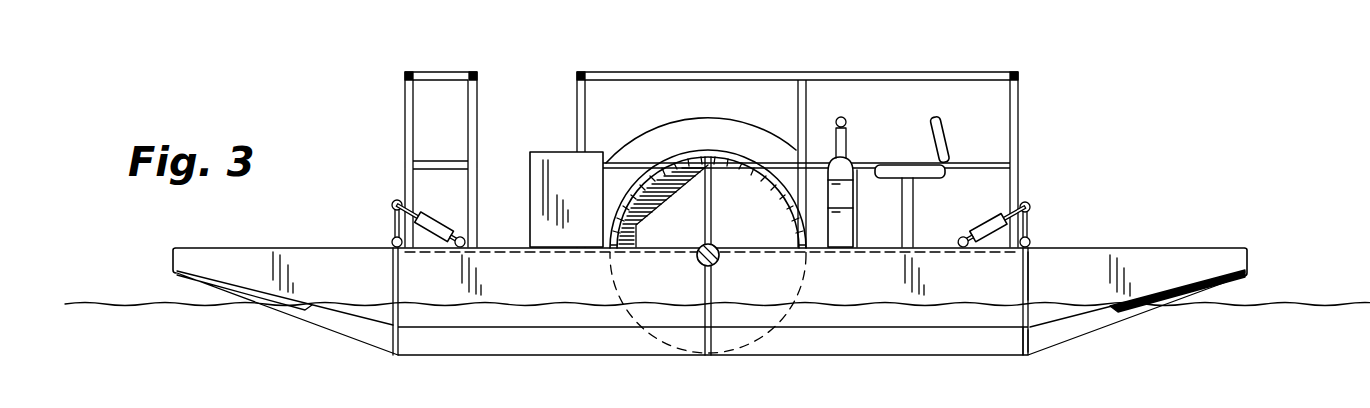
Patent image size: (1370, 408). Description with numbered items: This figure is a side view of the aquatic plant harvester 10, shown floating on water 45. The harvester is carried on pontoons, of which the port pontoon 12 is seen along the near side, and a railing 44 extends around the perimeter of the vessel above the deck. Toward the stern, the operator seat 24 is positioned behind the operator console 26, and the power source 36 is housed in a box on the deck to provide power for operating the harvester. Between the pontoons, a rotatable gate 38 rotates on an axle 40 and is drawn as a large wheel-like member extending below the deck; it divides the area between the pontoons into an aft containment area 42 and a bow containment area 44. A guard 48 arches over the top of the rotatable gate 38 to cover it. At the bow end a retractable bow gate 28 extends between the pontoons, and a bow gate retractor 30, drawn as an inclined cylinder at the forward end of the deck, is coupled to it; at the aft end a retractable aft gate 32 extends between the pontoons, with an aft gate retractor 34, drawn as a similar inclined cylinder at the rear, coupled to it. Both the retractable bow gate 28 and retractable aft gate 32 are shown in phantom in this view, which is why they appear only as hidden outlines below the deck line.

The aquatic plant harvester 10 is at (1140, 122).
The port pontoon 12 is at (238, 247).
The operator seat 24 is at (942, 127).
The operator console 26 is at (860, 112).
The retractable bow gate 28 is at (393, 280).
The bow gate retractor 30 is at (450, 215).
The retractable aft gate 32 is at (1032, 265).
The aft gate retractor 34 is at (968, 233).
The power source 36 is at (590, 194).
The rotatable gate 38 is at (705, 290).
The axle 40 is at (720, 259).
The aft containment area 42 is at (998, 350).
The railing 44 is at (433, 72).
The water 45 is at (1290, 317).
The guard 48 is at (736, 130).